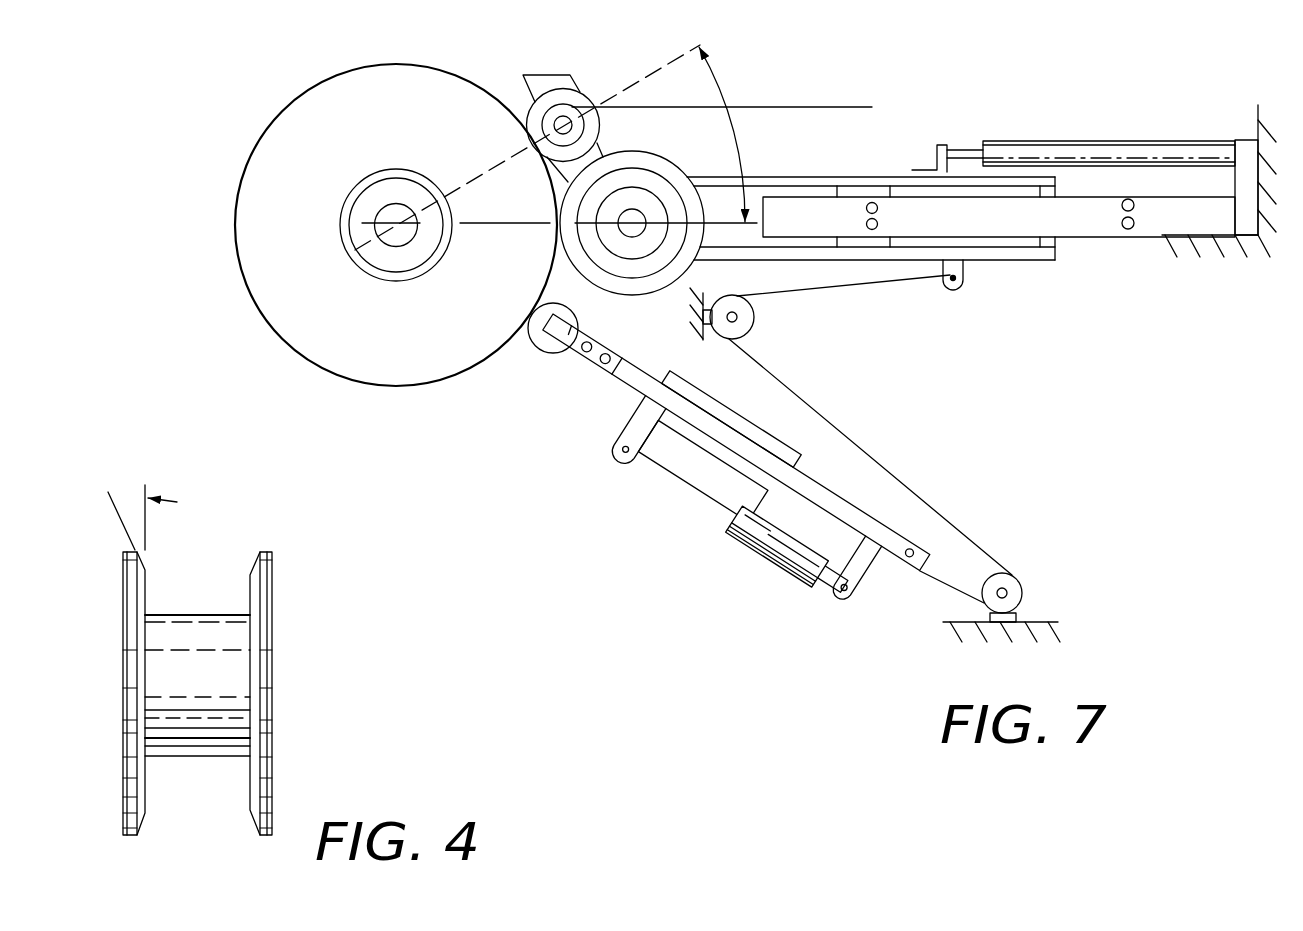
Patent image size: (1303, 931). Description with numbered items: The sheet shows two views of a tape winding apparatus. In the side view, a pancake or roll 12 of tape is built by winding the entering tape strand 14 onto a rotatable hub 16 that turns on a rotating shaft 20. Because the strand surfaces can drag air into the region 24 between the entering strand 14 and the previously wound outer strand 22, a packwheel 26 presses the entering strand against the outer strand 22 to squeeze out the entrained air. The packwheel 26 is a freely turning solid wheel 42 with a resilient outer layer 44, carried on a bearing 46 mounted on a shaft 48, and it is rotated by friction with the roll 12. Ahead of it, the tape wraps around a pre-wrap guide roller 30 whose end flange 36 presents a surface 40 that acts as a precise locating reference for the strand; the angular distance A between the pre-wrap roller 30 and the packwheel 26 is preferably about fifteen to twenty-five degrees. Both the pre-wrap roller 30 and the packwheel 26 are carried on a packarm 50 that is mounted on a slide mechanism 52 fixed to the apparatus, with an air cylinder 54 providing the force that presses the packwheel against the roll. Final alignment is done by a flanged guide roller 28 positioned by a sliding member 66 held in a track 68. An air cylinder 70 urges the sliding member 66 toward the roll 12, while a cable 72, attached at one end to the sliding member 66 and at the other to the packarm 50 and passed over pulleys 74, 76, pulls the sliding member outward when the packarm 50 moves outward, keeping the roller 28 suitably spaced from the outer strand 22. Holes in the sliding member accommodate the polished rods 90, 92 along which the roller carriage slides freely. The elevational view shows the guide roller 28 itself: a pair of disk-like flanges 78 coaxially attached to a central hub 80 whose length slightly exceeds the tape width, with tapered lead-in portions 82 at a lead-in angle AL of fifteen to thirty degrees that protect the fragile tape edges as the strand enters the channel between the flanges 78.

In FIG. 7, the roll 12 is at (366, 206).
In FIG. 7, the tape strand 14 is at (835, 107).
In FIG. 7, the hub 16 is at (362, 265).
In FIG. 7, the shaft 20 is at (405, 238).
In FIG. 7, the outer strand 22 is at (430, 66).
In FIG. 7, the region 24 is at (543, 158).
In FIG. 7, the packwheel 26 is at (600, 227).
In FIG. 7, the flanged guide roller 28 is at (543, 347).
In FIG. 4, the flanged guide roller 28 is at (207, 703).
In FIG. 7, the pre-wrap guide roller 30 is at (563, 107).
In FIG. 7, the end flange 36 is at (530, 107).
In FIG. 7, the surface 40 is at (560, 100).
In FIG. 7, the solid wheel 42 is at (653, 267).
In FIG. 7, the resilient outer layer 44 is at (602, 282).
In FIG. 7, the bearing 46 is at (657, 203).
In FIG. 7, the shaft 48 is at (637, 212).
In FIG. 7, the packarm 50 is at (1038, 263).
In FIG. 7, the slide mechanism 52 is at (1113, 225).
In FIG. 7, the air cylinder 54 is at (1097, 145).
In FIG. 7, the sliding member 66 is at (736, 442).
In FIG. 7, the track 68 is at (720, 409).
In FIG. 7, the air cylinder 70 is at (771, 564).
In FIG. 7, the cable 72 is at (930, 502).
In FIG. 7, the pulley 74 is at (1021, 588).
In FIG. 7, the pulley 76 is at (754, 328).
In FIG. 4, the flanges 78 is at (125, 623).
In FIG. 4, the central hub 80 is at (201, 614).
In FIG. 4, the tapered lead-in portions 82 is at (252, 820).
In FIG. 7, the rod 90 is at (589, 356).
In FIG. 7, the rod 92 is at (607, 366).
In FIG. 7, the angular distance A is at (718, 90).
In FIG. 4, the lead-in angle AL is at (106, 506).